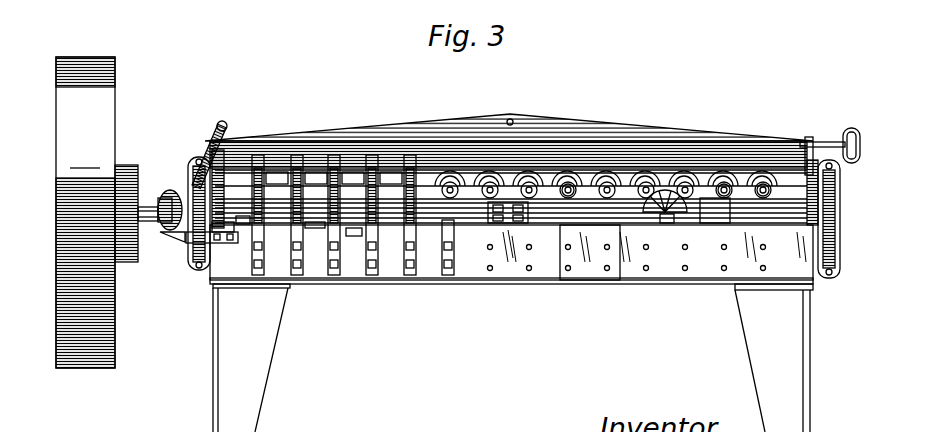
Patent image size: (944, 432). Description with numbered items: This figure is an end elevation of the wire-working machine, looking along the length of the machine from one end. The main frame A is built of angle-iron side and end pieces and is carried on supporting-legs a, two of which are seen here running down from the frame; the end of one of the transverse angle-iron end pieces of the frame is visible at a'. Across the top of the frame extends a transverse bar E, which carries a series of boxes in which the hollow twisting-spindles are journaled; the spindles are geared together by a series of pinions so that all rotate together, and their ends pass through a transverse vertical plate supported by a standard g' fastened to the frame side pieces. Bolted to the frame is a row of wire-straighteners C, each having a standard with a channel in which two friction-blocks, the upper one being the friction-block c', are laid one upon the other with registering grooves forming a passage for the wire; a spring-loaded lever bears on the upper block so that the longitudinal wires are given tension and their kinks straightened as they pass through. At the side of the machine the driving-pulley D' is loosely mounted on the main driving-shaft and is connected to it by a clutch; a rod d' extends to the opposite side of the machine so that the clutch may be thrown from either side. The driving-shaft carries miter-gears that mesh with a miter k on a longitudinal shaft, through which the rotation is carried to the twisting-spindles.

The driving-pulley D' is at (85, 212).
The standard g' is at (520, 142).
The friction-block c' is at (271, 149).
The wire-straightener C is at (283, 165).
The rod d' is at (406, 143).
The main frame A is at (507, 283).
The supporting-legs a is at (513, 358).
The frame plate a' is at (620, 253).
The transverse bar E is at (707, 205).
The miter k is at (673, 226).